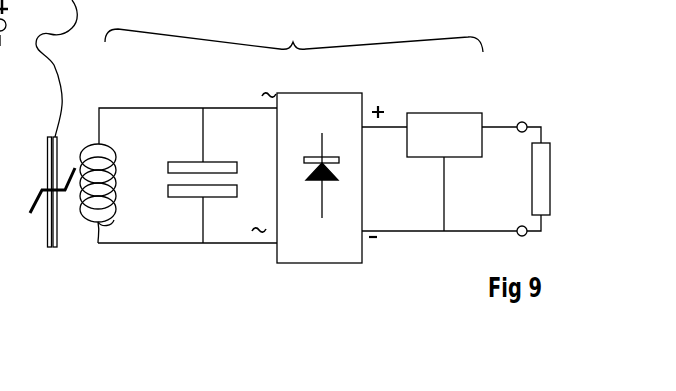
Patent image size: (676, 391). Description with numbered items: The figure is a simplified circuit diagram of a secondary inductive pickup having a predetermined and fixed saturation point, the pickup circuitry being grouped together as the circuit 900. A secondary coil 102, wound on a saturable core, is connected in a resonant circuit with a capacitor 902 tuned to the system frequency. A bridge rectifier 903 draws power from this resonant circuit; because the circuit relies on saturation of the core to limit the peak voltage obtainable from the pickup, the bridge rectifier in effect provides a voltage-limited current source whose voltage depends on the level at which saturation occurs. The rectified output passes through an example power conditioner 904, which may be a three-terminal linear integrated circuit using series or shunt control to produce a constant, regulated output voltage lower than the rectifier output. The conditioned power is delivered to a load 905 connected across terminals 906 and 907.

The secondary coil 102 is at (98, 243).
The power supply circuit 900 is at (294, 31).
The capacitor 902 is at (238, 163).
The bridge rectifier 903 is at (366, 93).
The power conditioner 904 is at (491, 82).
The load 905 is at (550, 212).
The terminal 906 is at (519, 227).
The terminal 907 is at (527, 123).